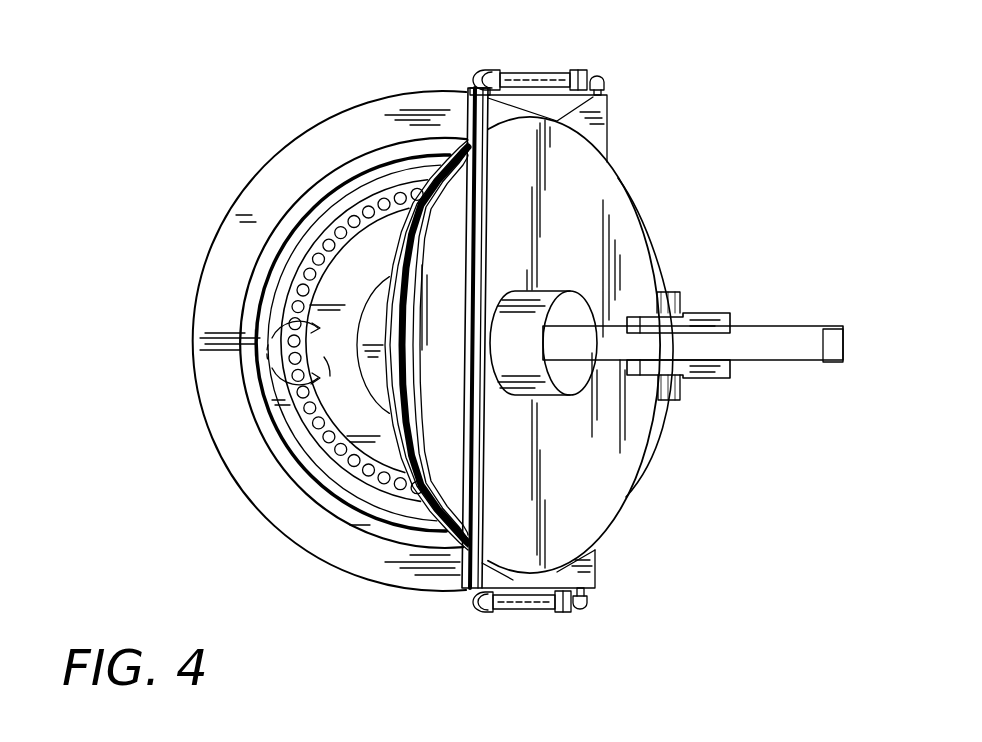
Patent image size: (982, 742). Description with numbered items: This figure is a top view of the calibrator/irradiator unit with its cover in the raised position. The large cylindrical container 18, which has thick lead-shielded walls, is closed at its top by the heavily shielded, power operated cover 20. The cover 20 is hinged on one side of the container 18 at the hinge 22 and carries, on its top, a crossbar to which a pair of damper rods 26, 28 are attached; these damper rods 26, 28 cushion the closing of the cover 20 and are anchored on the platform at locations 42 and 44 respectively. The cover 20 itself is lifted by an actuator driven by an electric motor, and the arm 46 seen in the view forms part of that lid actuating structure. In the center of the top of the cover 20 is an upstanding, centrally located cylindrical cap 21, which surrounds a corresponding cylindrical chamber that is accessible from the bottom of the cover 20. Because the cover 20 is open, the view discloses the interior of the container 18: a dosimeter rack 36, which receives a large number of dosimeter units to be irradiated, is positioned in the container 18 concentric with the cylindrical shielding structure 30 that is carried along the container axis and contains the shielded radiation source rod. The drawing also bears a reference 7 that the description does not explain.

The cylindrical container 18 is at (262, 172).
The cover 20 is at (593, 177).
The cylindrical cap 21 is at (573, 290).
The hinge 22 is at (680, 293).
The damper rod 26 is at (517, 70).
The damper rod 28 is at (528, 610).
The cylindrical shielding structure 30 is at (373, 300).
The dosimeter rack 36 is at (333, 432).
The anchor location 42 is at (600, 130).
The anchor location 44 is at (597, 558).
The arm 46 is at (802, 340).
The rotation direction arrow 7 is at (301, 353).